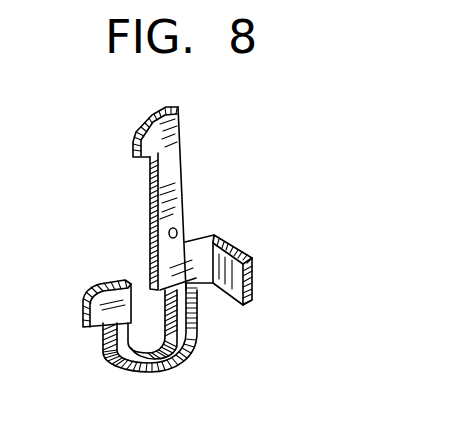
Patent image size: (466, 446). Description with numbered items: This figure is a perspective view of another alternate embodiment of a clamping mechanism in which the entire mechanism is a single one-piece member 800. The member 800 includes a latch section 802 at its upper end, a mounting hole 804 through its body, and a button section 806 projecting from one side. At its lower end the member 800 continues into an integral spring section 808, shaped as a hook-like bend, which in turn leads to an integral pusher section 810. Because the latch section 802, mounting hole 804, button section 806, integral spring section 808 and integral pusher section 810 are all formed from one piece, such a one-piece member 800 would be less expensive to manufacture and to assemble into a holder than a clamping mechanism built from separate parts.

The one-piece member 800 is at (150, 213).
The latch section 802 is at (135, 133).
The mounting hole 804 is at (180, 227).
The button section 806 is at (246, 258).
The integral spring section 808 is at (168, 369).
The integral pusher section 810 is at (84, 298).